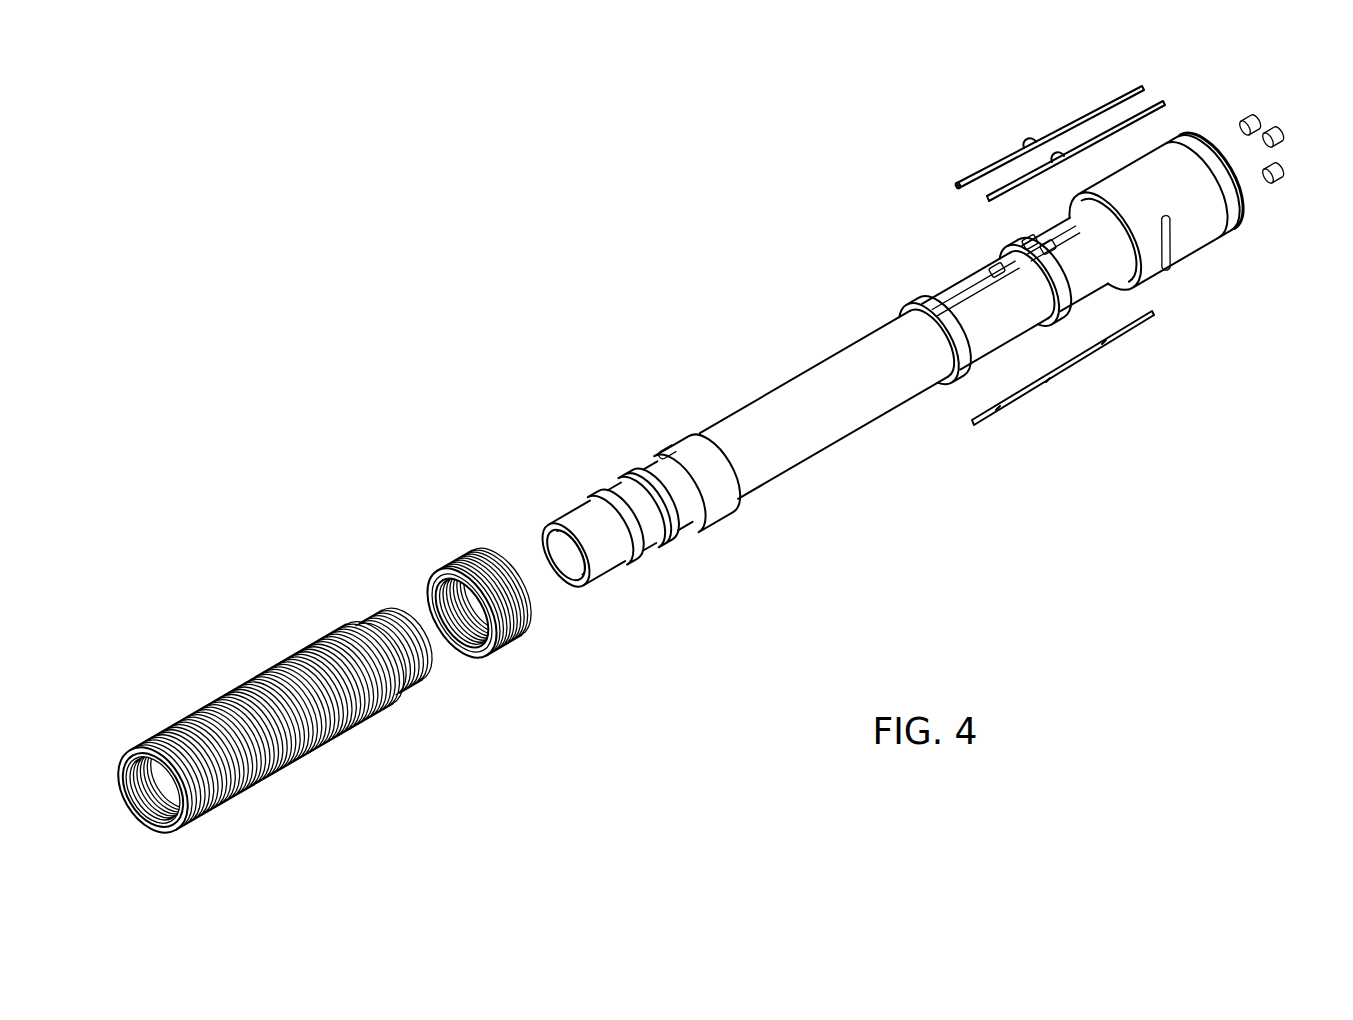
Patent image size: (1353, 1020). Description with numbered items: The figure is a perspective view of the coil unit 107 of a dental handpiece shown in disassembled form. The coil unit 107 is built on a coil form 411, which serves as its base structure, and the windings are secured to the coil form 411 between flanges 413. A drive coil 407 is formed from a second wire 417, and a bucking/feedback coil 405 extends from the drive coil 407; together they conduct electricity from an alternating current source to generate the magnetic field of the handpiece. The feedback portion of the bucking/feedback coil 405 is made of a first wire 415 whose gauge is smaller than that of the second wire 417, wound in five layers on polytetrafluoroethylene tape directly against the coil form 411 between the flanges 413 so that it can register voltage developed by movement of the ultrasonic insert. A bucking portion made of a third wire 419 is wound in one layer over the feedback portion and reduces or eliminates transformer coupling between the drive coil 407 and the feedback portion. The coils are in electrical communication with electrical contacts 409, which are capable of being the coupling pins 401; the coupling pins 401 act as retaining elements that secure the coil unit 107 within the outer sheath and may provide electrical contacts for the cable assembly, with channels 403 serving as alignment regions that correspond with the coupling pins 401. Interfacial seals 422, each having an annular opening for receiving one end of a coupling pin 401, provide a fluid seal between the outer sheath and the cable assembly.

The coil unit 107 is at (891, 367).
The coupling pins 401 is at (1033, 249).
The channels 403 is at (1027, 275).
The bucking/feedback coil 405 is at (447, 594).
The drive coil 407 is at (276, 718).
The electrical contacts 409 is at (956, 182).
The coil form 411 is at (904, 357).
The flanges 413 is at (868, 380).
The first wire 415 is at (466, 611).
The second wire 417 is at (400, 645).
The third wire 419 is at (460, 555).
The interfacial seals 422 is at (1244, 118).